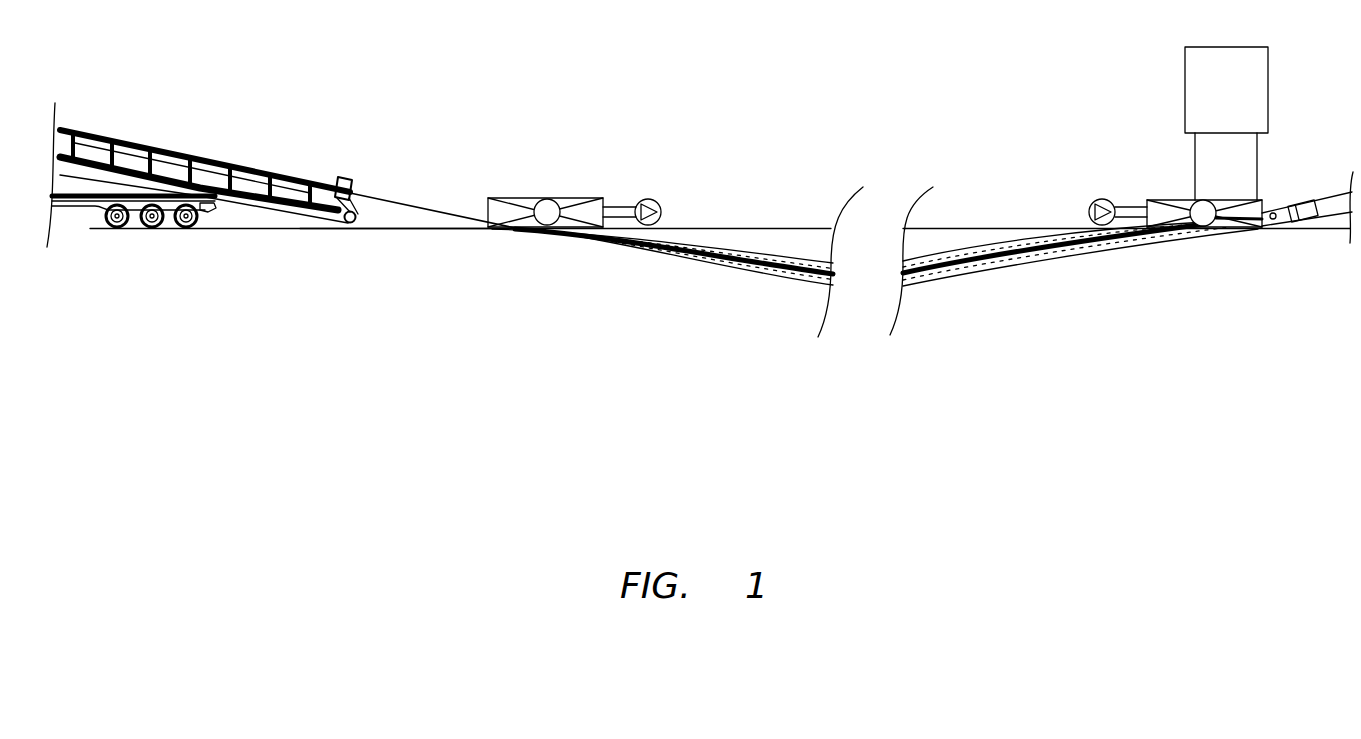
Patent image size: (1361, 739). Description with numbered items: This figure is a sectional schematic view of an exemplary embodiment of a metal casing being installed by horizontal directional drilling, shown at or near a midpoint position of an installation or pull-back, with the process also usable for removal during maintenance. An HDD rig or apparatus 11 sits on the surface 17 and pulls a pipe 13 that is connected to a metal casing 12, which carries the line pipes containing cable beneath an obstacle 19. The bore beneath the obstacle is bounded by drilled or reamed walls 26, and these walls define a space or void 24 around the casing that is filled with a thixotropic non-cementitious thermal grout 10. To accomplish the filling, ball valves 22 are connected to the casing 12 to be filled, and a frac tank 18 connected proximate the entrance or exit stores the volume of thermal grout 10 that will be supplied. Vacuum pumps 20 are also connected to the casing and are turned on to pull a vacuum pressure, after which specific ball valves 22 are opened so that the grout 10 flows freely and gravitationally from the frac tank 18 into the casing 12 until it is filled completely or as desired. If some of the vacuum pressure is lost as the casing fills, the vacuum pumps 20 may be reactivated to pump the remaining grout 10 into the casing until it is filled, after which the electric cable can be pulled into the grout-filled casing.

The thixotropic non-cementitious thermal grout 10 is at (708, 274).
The HDD rig or apparatus 11 is at (199, 126).
The metal casing 12 is at (1342, 192).
The pipe 13 is at (428, 206).
The surface 17 is at (428, 232).
The frac tank 18 is at (1268, 92).
The obstacle 19 is at (757, 227).
The vacuum pump 20 is at (650, 199).
The ball valve 22 is at (546, 199).
The space or void 24 is at (958, 247).
The drilled or reamed walls 26 is at (942, 282).